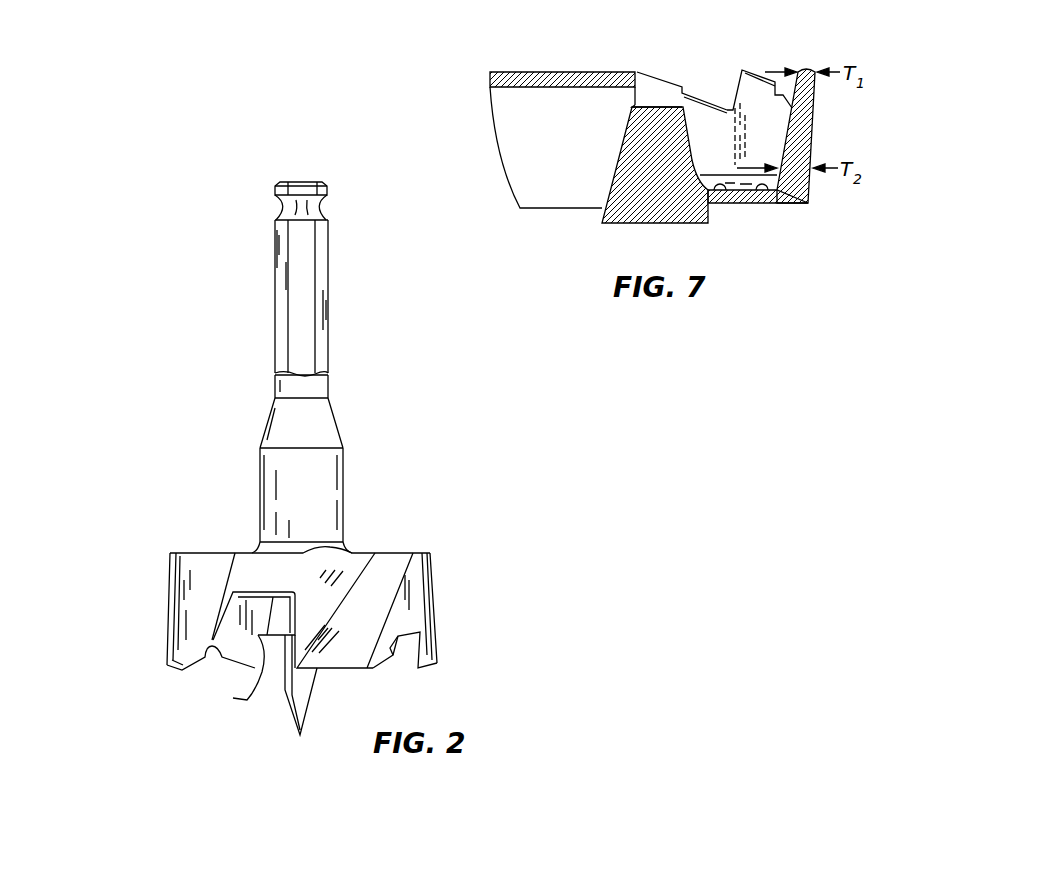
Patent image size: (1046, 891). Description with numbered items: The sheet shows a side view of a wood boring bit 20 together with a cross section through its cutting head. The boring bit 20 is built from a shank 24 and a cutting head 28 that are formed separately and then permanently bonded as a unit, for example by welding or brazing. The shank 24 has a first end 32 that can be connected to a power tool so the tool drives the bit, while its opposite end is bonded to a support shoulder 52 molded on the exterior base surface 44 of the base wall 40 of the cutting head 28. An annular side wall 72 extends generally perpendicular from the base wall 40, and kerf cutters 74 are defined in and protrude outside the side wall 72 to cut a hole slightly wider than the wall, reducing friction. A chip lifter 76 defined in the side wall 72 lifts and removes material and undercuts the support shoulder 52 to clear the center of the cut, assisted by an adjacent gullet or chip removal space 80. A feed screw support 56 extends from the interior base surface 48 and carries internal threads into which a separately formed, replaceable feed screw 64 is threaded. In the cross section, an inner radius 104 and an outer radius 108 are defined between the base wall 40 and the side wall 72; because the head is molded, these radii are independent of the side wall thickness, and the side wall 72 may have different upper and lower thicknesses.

In FIG. 2, the boring bit 20 is at (448, 410).
In FIG. 2, the shank 24 is at (210, 440).
In FIG. 2, the cutting head 28 is at (110, 614).
In FIG. 2, the first end 32 is at (302, 180).
In FIG. 2, the base wall 40 is at (360, 552).
In FIG. 7, the exterior base surface 44 is at (755, 205).
In FIG. 7, the interior base surface 48 is at (715, 194).
In FIG. 2, the support shoulder 52 is at (257, 549).
In FIG. 7, the support shoulder 52 is at (630, 223).
In FIG. 2, the feed screw support 56 is at (262, 680).
In FIG. 7, the feed screw support 56 is at (657, 96).
In FIG. 2, the feed screw 64 is at (270, 745).
In FIG. 2, the side wall 72 is at (433, 600).
In FIG. 7, the side wall 72 is at (719, 142).
In FIG. 2, the kerf cutters 74 is at (175, 663).
In FIG. 7, the kerf cutters 74 is at (765, 70).
In FIG. 2, the chip lifter 76 is at (348, 645).
In FIG. 7, the chip lifter 76 is at (515, 176).
In FIG. 2, the chip removal space 80 is at (220, 682).
In FIG. 7, the inner radius 104 is at (764, 192).
In FIG. 7, the outer radius 108 is at (803, 206).